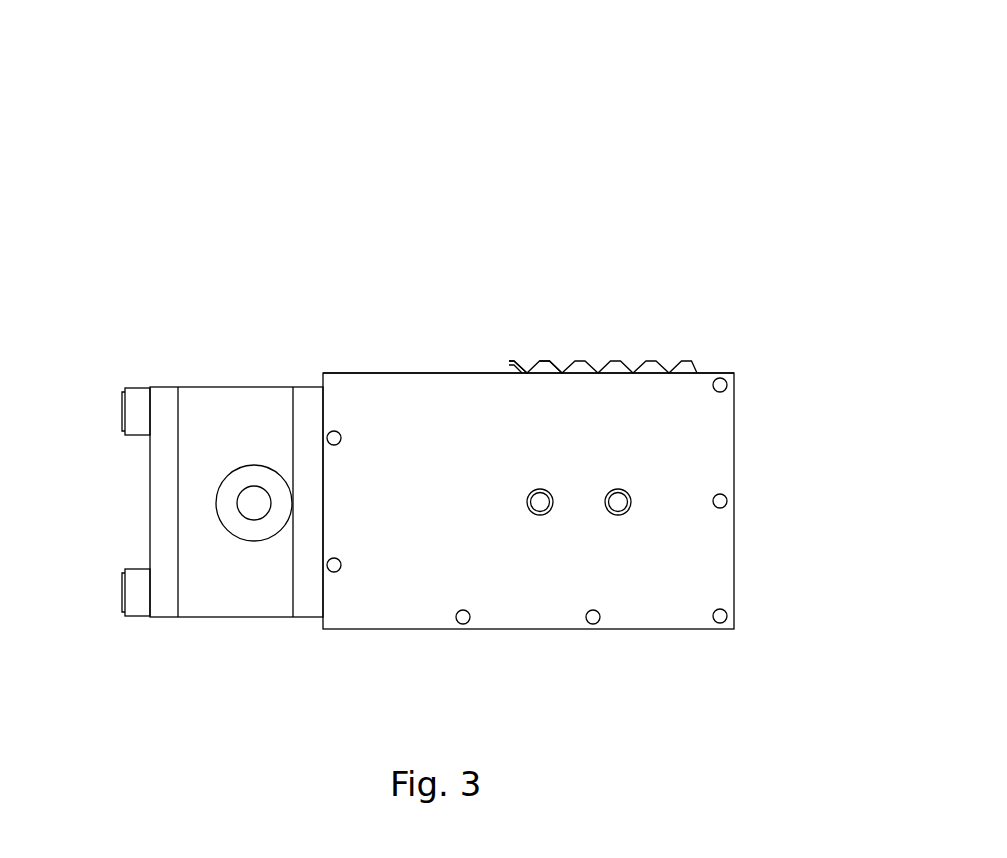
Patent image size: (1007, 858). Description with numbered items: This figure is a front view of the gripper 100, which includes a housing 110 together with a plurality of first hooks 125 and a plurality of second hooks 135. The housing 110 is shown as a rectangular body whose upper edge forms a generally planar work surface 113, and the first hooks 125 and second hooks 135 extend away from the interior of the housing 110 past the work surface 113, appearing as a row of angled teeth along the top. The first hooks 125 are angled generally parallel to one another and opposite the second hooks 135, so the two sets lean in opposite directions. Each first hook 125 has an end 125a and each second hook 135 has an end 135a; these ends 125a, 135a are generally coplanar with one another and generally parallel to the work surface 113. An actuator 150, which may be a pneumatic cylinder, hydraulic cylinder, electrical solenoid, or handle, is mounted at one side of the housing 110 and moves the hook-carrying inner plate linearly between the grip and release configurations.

The gripper 100 is at (652, 106).
The housing 110 is at (716, 576).
The work surface 113 is at (404, 373).
The first hooks 125 is at (688, 360).
The end of first hook 125a is at (540, 360).
The second hooks 135 is at (662, 360).
The end of second hook 135a is at (513, 360).
The actuator 150 is at (230, 394).